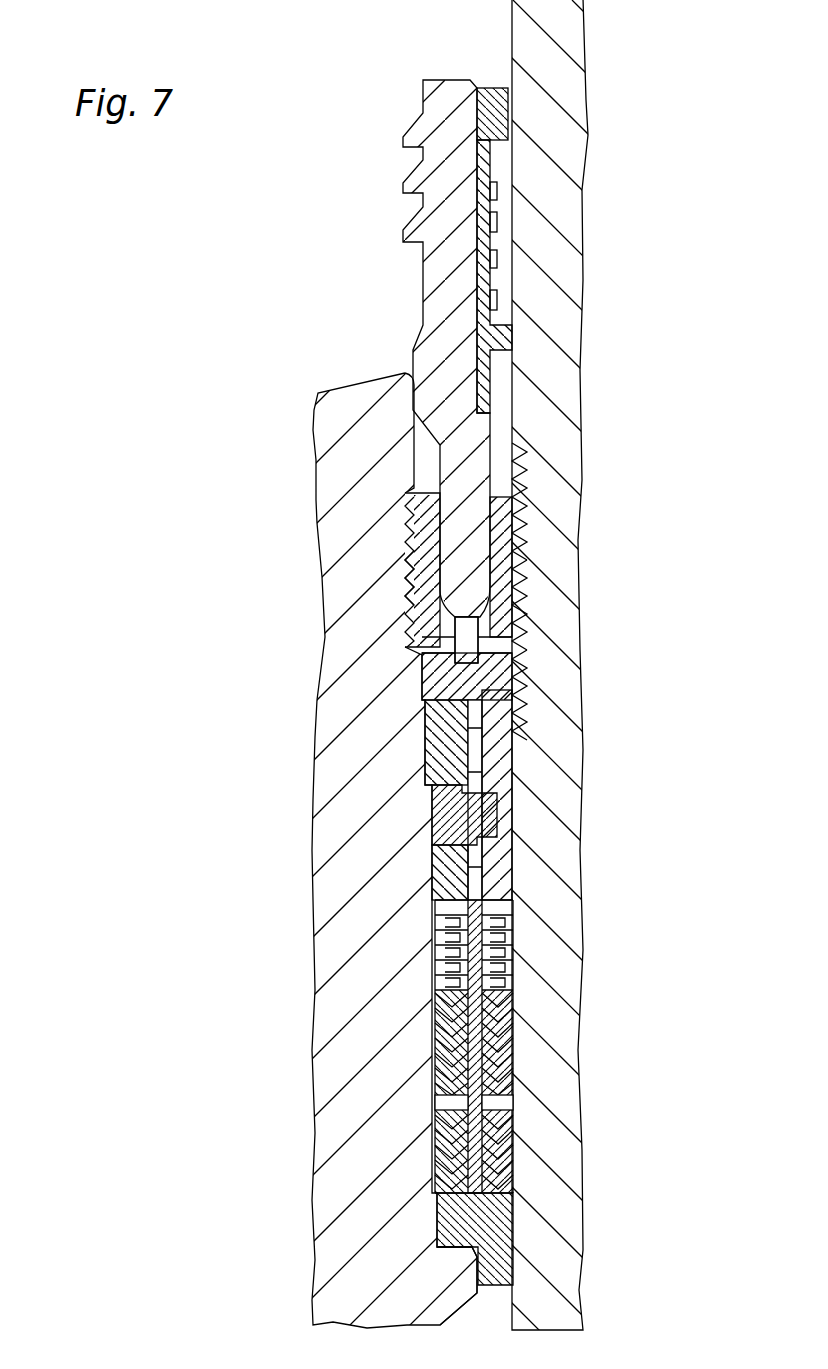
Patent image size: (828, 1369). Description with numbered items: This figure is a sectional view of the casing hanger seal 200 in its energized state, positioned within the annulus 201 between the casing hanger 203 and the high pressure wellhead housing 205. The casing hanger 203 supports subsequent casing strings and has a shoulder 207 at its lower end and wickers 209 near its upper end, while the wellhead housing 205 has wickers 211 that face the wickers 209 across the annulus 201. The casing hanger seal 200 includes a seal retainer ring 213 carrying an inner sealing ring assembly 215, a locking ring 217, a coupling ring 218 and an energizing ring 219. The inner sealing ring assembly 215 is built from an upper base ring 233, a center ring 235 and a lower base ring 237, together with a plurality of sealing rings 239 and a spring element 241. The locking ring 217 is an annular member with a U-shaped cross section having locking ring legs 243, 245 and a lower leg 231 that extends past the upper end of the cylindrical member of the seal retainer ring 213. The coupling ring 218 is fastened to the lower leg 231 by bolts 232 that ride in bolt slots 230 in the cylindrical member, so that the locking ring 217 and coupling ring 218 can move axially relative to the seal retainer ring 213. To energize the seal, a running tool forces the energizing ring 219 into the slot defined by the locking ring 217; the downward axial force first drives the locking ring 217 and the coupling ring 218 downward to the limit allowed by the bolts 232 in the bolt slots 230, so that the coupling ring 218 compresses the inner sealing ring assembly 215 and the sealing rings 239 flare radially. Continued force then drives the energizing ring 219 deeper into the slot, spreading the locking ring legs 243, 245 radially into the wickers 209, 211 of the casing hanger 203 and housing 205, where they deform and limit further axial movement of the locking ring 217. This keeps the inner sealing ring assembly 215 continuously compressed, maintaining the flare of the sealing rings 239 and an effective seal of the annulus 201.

The casing hanger seal 200 is at (392, 279).
The annulus 201 is at (400, 342).
The casing hanger 203 is at (345, 645).
The high pressure wellhead housing 205 is at (560, 445).
The shoulder 207 is at (457, 1265).
The wickers 209 is at (405, 545).
The wickers 211 is at (525, 562).
The seal retainer ring 213 is at (515, 1218).
The inner sealing ring assembly 215 is at (341, 1046).
The locking ring 217 is at (515, 670).
The coupling ring 218 is at (440, 735).
The energizing ring 219 is at (440, 142).
The bolt slots 230 is at (475, 777).
The bolts 232 is at (460, 808).
The lower leg 231 is at (515, 877).
The upper base ring 233 is at (440, 1010).
The center ring 235 is at (440, 1100).
The lower base ring 237 is at (376, 1151).
The sealing rings 239 is at (440, 1040).
The spring element 241 is at (440, 962).
The locking ring leg 243 is at (525, 600).
The locking ring leg 245 is at (405, 575).